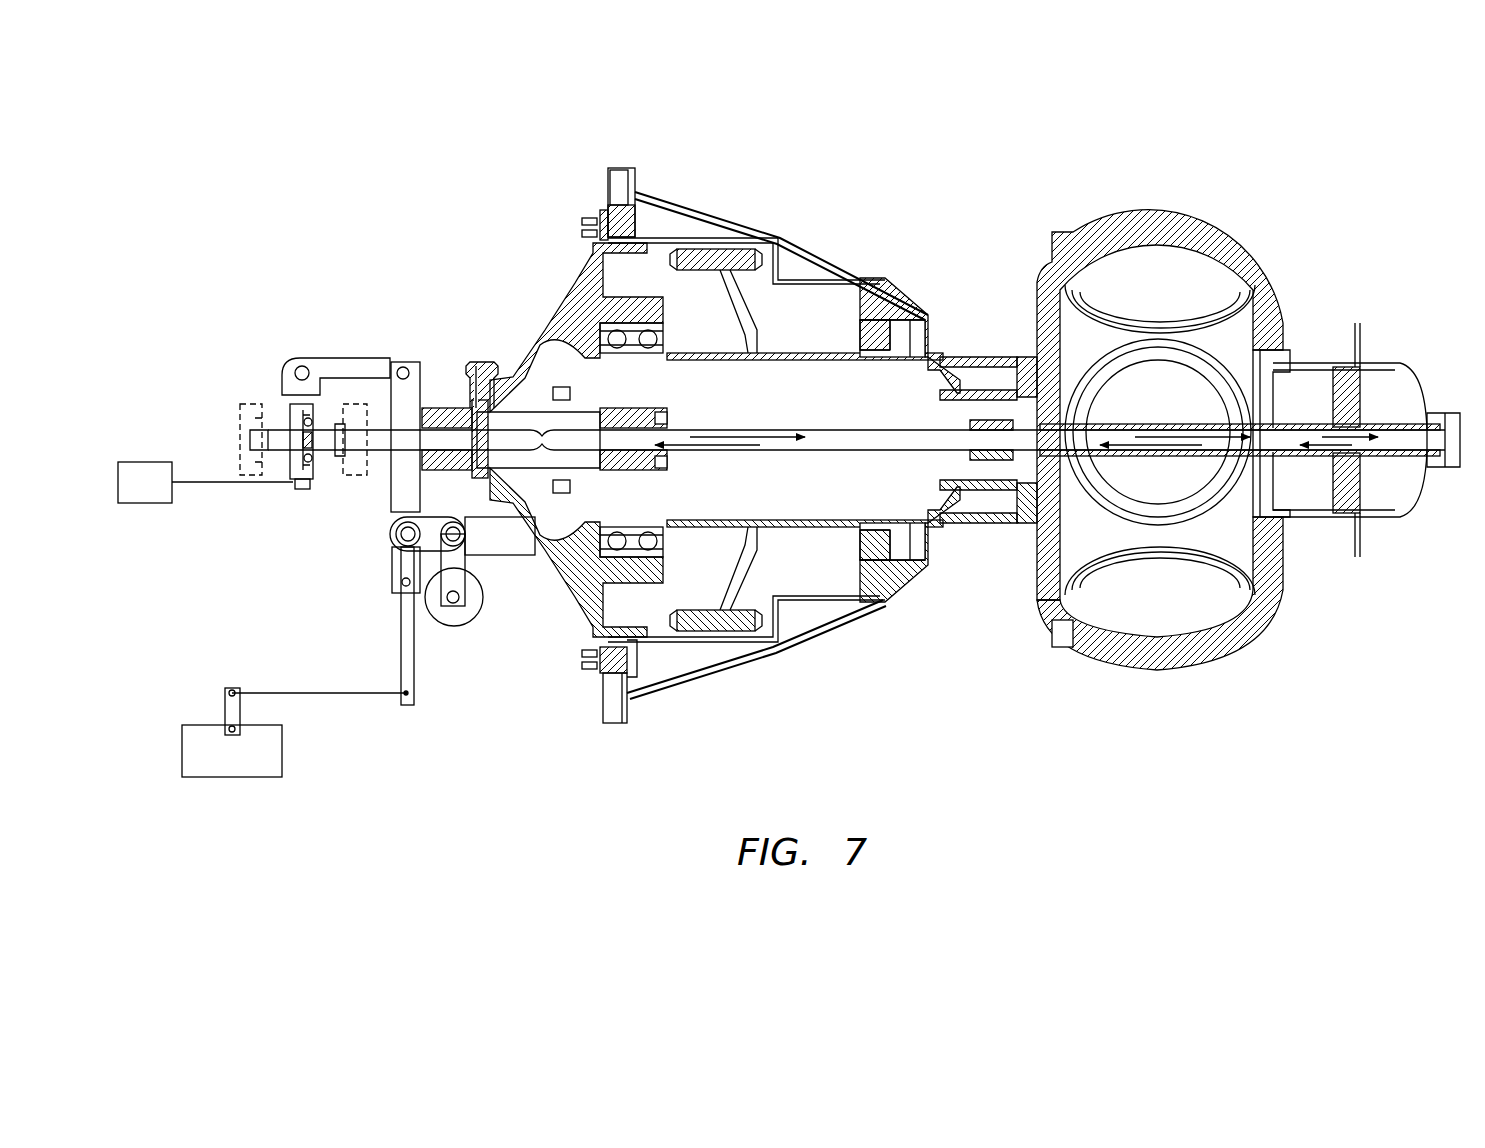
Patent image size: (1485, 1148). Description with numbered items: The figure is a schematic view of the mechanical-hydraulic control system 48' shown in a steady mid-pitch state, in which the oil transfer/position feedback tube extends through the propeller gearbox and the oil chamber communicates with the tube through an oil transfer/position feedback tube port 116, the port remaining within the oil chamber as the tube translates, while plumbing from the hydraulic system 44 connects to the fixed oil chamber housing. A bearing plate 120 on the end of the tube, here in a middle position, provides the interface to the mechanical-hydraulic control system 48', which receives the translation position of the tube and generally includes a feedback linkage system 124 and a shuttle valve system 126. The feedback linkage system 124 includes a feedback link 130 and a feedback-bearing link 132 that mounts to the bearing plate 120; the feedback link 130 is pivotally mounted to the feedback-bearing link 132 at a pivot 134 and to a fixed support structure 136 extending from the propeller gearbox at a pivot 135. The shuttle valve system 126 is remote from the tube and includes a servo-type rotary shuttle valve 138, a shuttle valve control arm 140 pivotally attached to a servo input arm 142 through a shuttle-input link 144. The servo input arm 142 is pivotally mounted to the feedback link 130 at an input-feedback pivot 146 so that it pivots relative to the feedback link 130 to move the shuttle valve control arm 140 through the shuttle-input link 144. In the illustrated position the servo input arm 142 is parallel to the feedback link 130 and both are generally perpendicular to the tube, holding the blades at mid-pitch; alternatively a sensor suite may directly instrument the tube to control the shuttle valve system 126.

The hydraulic system 44 is at (483, 352).
The mechanical-hydraulic control system 48' is at (296, 853).
The oil transfer/position feedback tube port 116 is at (545, 432).
The bearing plate 120 is at (292, 410).
The feedback linkage system 124 is at (315, 340).
The shuttle valve system 126 is at (485, 620).
The feedback link 130 is at (398, 497).
The feedback-bearing link 132 is at (345, 360).
The pivot 134 is at (404, 365).
The pivot 135 is at (388, 542).
The fixed support structure 136 is at (512, 557).
The rotary shuttle valve 138 is at (456, 622).
The shuttle valve control arm 140 is at (448, 598).
The servo input arm 142 is at (402, 660).
The shuttle-input link 144 is at (428, 546).
The input-feedback pivot 146 is at (400, 584).